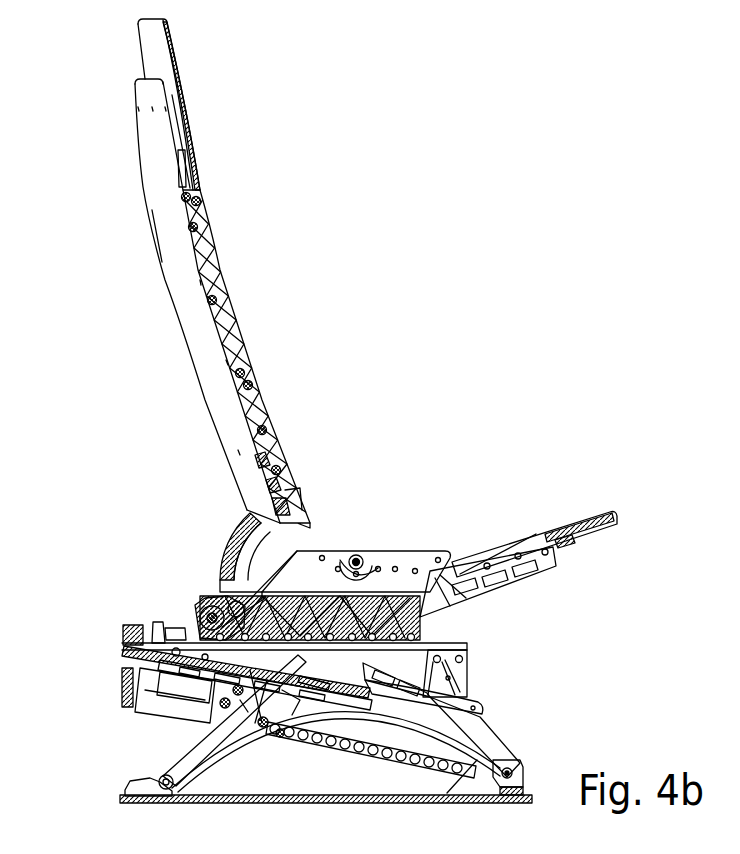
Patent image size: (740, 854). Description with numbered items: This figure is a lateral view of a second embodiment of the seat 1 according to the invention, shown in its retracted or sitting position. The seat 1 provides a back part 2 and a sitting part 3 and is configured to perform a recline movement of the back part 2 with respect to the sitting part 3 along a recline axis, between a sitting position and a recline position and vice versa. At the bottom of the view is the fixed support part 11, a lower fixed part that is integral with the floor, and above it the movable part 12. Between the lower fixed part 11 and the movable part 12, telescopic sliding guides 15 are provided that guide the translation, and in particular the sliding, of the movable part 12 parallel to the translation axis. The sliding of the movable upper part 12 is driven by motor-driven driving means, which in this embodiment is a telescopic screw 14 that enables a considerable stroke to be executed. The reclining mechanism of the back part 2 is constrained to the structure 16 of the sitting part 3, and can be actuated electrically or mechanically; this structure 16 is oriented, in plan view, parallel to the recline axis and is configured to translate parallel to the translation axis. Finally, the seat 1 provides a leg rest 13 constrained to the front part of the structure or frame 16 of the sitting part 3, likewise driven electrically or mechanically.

The seat 1 is at (388, 316).
The back part 2 is at (208, 284).
The sitting part 3 is at (350, 553).
The fixed support part 11 is at (178, 768).
The movable part 12 is at (203, 620).
The leg rest 13 is at (540, 533).
The telescopic screw 14 is at (466, 719).
The telescopic sliding guides 15 is at (121, 652).
The structure of the sitting part 16 is at (388, 654).